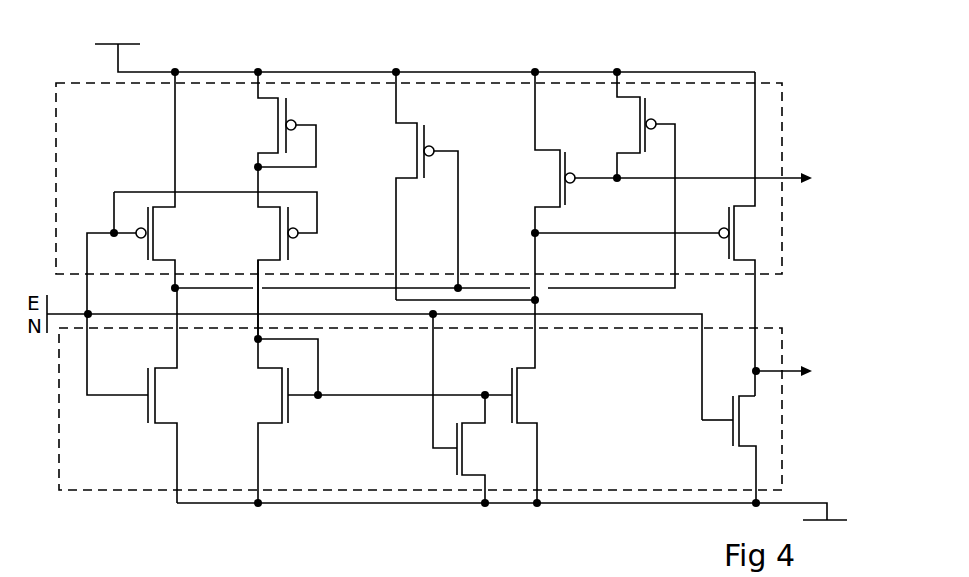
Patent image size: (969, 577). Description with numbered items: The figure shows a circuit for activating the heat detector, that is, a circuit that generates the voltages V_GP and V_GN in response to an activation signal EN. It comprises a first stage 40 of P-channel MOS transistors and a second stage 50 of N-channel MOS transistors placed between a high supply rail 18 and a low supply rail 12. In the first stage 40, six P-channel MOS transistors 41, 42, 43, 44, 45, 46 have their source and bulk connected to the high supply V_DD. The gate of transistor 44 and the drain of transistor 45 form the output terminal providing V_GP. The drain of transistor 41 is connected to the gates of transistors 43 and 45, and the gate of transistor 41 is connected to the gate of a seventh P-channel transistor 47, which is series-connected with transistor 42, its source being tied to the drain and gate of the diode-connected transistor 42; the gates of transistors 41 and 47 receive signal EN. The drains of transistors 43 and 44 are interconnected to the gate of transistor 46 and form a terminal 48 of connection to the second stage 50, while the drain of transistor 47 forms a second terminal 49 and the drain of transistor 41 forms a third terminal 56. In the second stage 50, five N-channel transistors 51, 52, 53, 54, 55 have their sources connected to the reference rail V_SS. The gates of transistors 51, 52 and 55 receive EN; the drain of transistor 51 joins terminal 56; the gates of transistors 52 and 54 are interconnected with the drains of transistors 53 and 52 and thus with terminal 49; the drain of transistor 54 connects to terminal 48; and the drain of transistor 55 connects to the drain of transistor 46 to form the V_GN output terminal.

The low supply rail 12 is at (602, 503).
The high supply rail 18 is at (463, 72).
The first stage 40 is at (782, 115).
The P-channel MOS transistor 41 is at (135, 233).
The diode-connected transistor 42 is at (282, 121).
The P-channel MOS transistor 43 is at (424, 186).
The P-channel MOS transistor 44 is at (694, 186).
The P-channel MOS transistor 45 is at (611, 180).
The P-channel MOS transistor 46 is at (651, 234).
The seventh P-channel MOS transistor 47 is at (215, 253).
The terminal 48 is at (540, 300).
The second terminal 49 is at (259, 292).
The second stage 50 is at (783, 430).
The N-channel MOS transistor 51 is at (166, 395).
The N-channel MOS transistor 52 is at (382, 419).
The N-channel MOS transistor 53 is at (463, 408).
The N-channel MOS transistor 54 is at (532, 401).
The N-channel MOS transistor 55 is at (783, 431).
The third terminal 56 is at (178, 290).